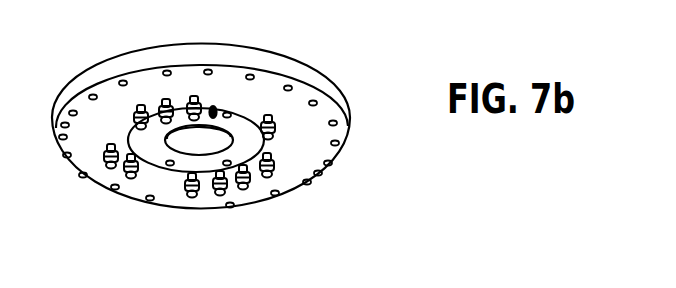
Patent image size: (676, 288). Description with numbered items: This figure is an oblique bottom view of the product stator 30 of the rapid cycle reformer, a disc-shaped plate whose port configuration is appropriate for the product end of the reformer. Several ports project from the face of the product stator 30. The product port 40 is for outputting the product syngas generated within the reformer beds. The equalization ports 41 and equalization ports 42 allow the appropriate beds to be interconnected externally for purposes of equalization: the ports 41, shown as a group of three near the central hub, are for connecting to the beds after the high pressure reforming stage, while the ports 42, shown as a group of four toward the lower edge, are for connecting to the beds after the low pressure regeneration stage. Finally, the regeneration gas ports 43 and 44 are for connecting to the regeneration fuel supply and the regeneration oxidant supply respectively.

The product stator 30 is at (347, 114).
The product port 40 is at (278, 136).
The equalization ports 41 is at (194, 96).
The equalization ports 42 is at (268, 184).
The regeneration gas port 43 is at (130, 183).
The regeneration gas port 44 is at (109, 174).